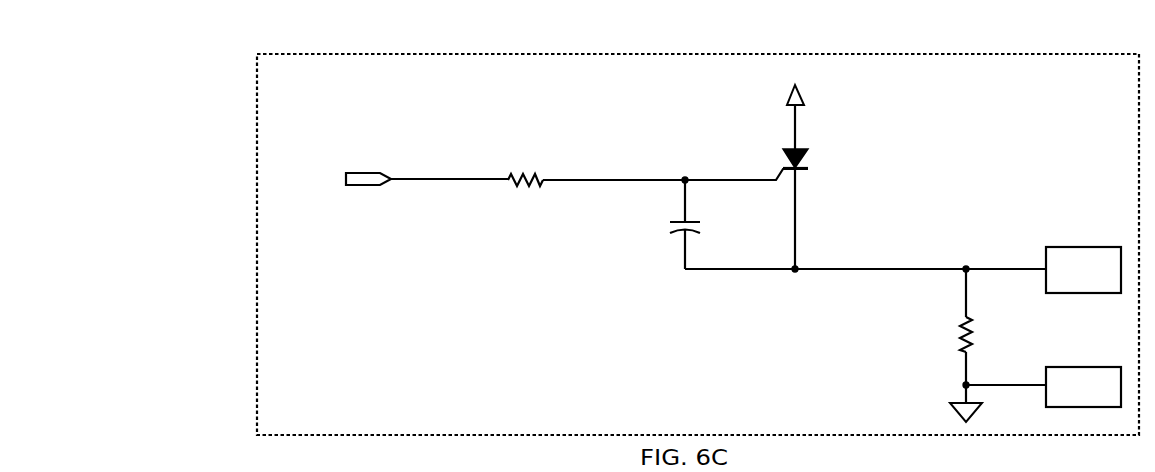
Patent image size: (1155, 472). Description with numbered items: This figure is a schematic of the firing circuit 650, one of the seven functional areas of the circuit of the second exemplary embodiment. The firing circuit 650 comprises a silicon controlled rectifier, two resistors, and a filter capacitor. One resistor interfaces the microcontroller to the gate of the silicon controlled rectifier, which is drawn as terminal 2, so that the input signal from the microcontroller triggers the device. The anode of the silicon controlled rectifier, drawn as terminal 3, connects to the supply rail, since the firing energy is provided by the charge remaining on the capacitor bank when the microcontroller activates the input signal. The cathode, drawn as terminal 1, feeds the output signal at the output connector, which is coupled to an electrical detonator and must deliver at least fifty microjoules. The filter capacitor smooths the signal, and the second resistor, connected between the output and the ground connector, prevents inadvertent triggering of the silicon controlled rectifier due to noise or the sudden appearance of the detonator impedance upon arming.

The firing circuit 650 is at (257, 234).
The SCR1 cathode terminal (pin 1) 1 is at (787, 218).
The SCR1 gate terminal (pin 2) 2 is at (754, 168).
The SCR1 anode terminal (pin 3) 3 is at (782, 127).